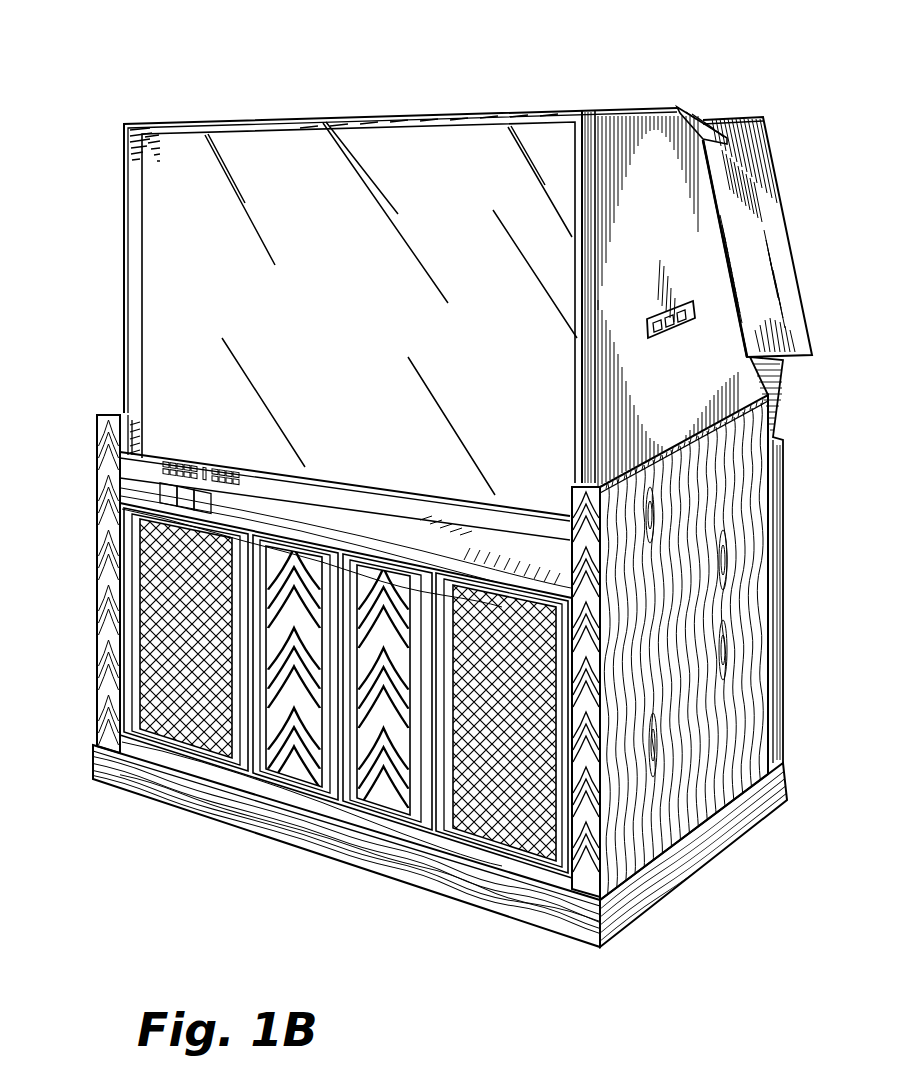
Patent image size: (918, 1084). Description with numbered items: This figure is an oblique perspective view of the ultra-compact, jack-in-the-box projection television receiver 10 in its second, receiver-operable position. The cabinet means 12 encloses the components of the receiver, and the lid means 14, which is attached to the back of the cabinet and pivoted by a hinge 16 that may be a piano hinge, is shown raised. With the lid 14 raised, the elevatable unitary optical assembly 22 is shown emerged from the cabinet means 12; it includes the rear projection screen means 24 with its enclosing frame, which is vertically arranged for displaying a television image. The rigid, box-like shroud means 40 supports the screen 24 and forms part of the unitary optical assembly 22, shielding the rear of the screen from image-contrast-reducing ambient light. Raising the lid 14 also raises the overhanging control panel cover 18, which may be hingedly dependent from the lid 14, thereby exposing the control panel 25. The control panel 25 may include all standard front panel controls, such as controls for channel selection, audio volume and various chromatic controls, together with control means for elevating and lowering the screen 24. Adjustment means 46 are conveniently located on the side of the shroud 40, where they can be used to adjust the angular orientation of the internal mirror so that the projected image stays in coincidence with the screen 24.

The projection television receiver 10 is at (105, 256).
The cabinet means 12 is at (100, 622).
The lid means 14 is at (779, 176).
The hinge 16 is at (786, 432).
The control panel cover 18 is at (689, 108).
The unitary optical assembly 22 is at (121, 162).
The rear projection screen means 24 is at (190, 348).
The control panel 25 is at (158, 461).
The shroud means 40 is at (681, 241).
The adjustment means 46 is at (698, 307).